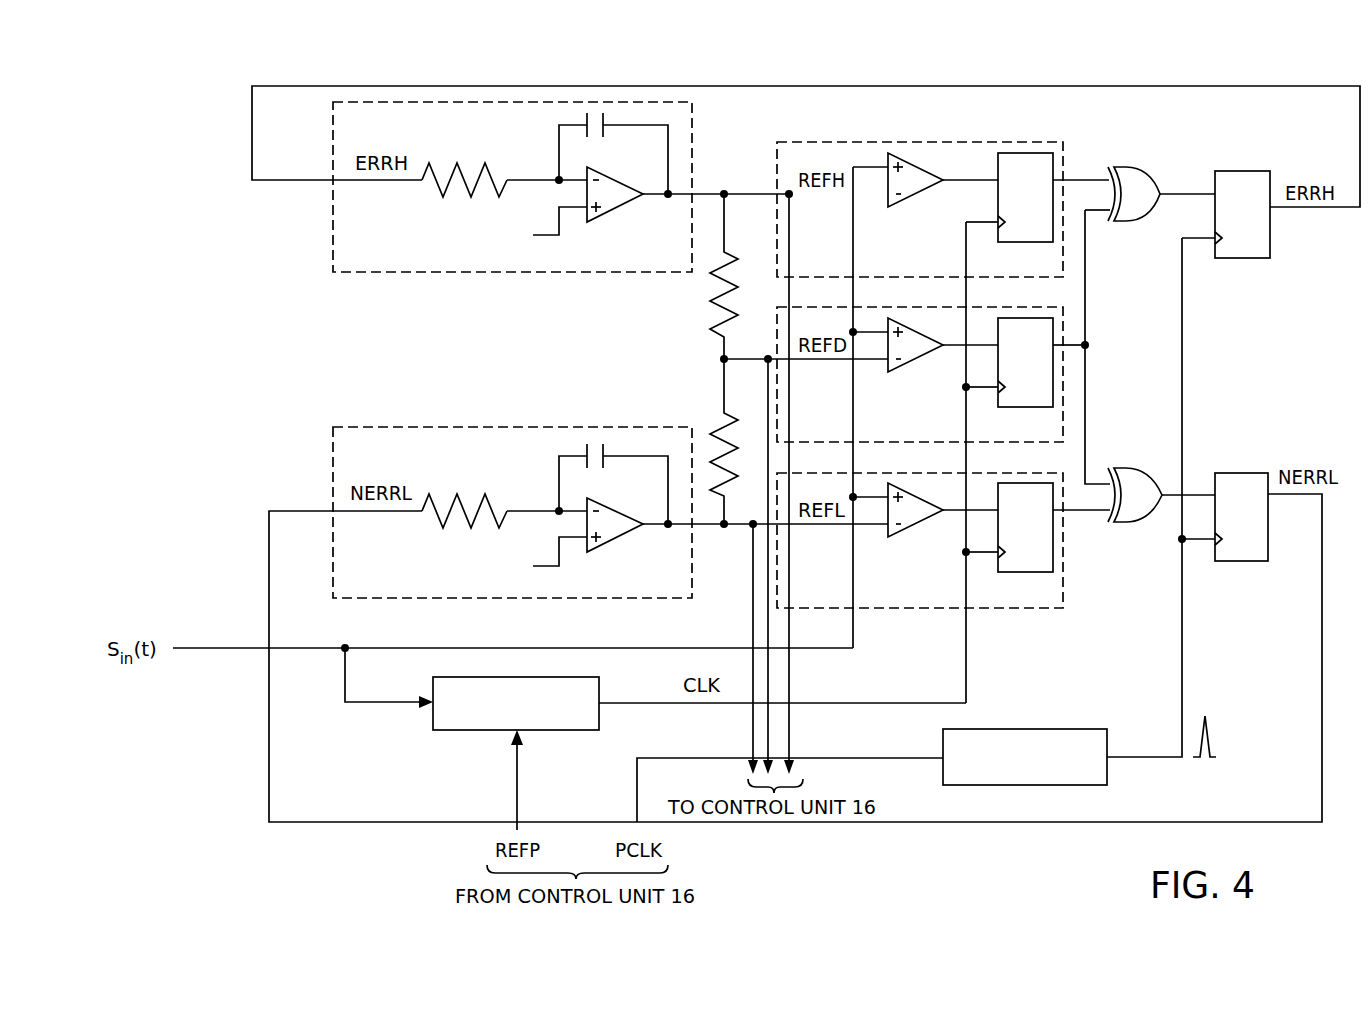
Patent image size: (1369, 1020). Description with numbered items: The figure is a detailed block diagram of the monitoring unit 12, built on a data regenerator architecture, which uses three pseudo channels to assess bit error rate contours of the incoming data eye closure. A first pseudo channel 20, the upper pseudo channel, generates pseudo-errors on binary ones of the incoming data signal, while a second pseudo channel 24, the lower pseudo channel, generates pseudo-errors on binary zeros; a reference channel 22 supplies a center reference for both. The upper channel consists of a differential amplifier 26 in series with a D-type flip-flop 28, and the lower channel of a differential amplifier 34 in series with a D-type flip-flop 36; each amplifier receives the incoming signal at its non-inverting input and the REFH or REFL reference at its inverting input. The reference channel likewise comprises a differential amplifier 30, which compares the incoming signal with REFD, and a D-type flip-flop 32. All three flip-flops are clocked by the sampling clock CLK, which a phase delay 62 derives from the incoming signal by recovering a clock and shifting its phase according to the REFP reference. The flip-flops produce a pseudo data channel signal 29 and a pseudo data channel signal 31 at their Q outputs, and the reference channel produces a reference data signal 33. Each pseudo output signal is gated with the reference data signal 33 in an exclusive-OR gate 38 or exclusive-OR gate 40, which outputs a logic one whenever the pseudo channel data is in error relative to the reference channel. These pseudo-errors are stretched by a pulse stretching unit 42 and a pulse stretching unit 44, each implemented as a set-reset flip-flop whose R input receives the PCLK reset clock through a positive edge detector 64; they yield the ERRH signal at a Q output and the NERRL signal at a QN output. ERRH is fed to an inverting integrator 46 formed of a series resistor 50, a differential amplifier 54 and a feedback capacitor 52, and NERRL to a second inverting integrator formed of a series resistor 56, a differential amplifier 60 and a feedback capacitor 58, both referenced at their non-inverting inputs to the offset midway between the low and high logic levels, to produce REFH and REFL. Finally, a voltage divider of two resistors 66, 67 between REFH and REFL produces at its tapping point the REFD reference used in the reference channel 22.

The monitoring unit 12 is at (1230, 42).
The first pseudo channel 20 is at (778, 220).
The reference channel 22 is at (777, 400).
The second pseudo channel 24 is at (771, 597).
The differential amplifier 26 is at (905, 207).
The D-type flip-flop 28 is at (1020, 243).
The pseudo data channel signal 29 is at (1085, 176).
The differential amplifier 30 is at (905, 372).
The pseudo data channel signal 31 is at (1088, 513).
The D-type flip-flop 32 is at (1020, 408).
The reference data signal 33 is at (1089, 350).
The differential amplifier 34 is at (905, 537).
The D-type flip-flop 36 is at (1020, 573).
The exclusive-OR gate 38 is at (1135, 166).
The exclusive-OR gate 40 is at (1133, 467).
The pulse stretching unit 42 is at (1240, 170).
The pulse stretching unit 44 is at (1239, 472).
The inverting integrator 46 is at (597, 273).
The series resistor 50 is at (457, 162).
The feedback capacitor 52 is at (600, 138).
The differential amplifier 54 is at (607, 206).
The series resistor 56 is at (457, 493).
The feedback capacitor 58 is at (600, 469).
The differential amplifier 60 is at (607, 537).
The phase delay 62 is at (597, 600).
The positive edge detector 64 is at (1088, 786).
The resistor 66 is at (710, 298).
The resistor 67 is at (712, 430).